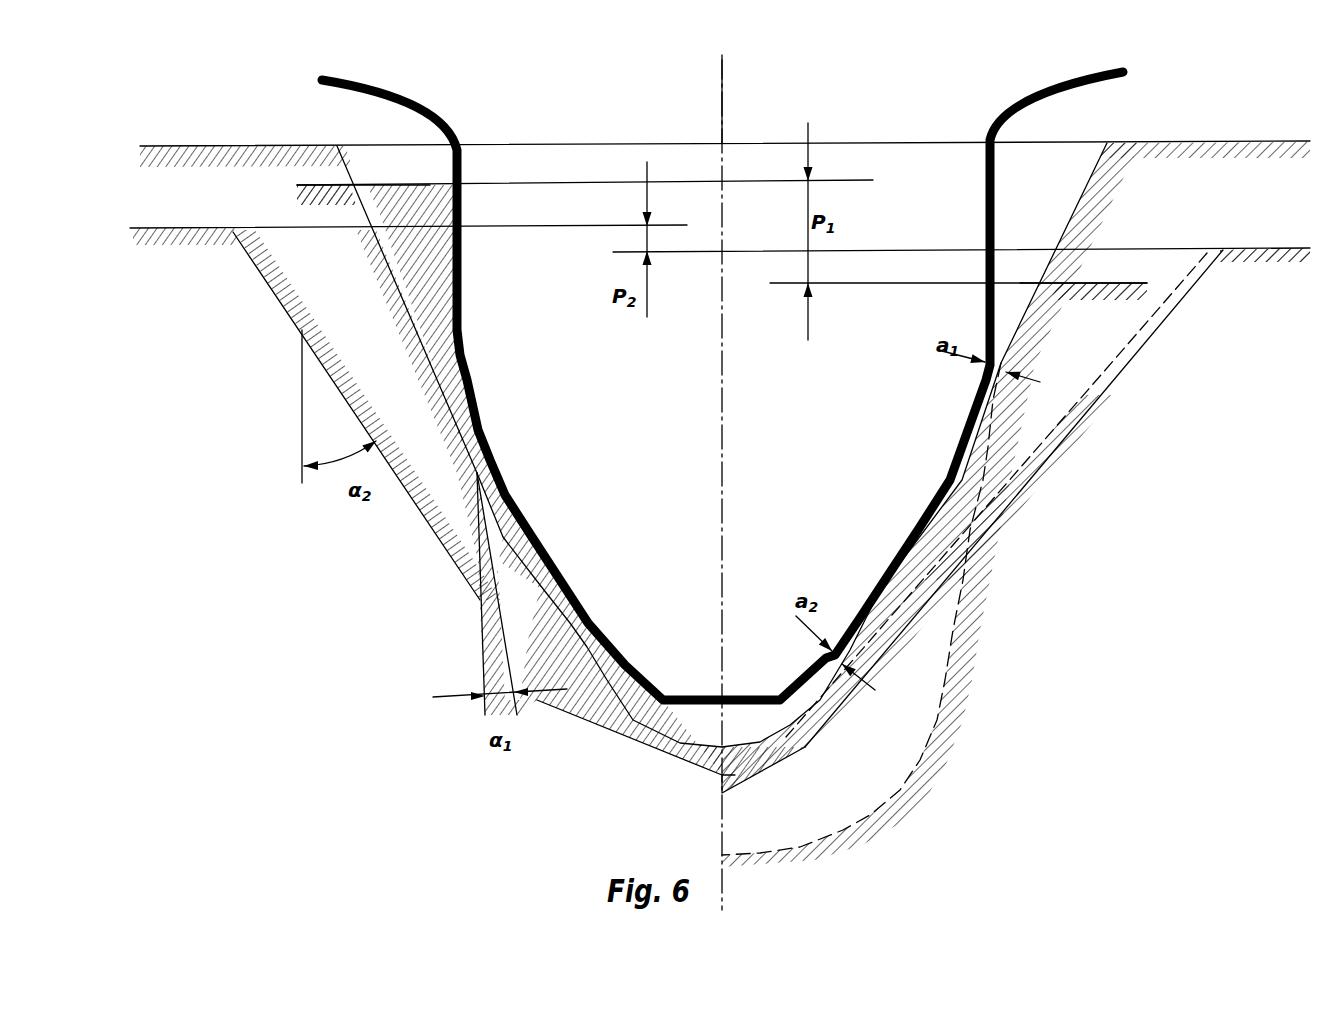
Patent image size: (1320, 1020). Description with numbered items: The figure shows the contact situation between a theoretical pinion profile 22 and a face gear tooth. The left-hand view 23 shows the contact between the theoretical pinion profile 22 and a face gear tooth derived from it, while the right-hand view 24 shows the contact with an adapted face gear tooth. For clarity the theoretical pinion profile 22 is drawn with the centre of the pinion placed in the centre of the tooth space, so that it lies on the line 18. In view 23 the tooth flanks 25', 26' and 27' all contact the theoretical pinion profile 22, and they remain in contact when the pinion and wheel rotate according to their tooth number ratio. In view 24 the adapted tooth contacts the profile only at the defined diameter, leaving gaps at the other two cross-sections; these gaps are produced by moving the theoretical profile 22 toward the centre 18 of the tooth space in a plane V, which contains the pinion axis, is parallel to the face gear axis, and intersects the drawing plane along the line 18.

The line of the centre of the tooth space 18 is at (724, 440).
The theoretical pinion profile 22 is at (448, 122).
The view of contact with derived face gear tooth 23 is at (385, 647).
The view of contact with adapted face gear tooth 24 is at (1052, 643).
The tooth flank at cross-section 25 25' is at (370, 159).
The tooth flank at cross-section 26 26' is at (384, 430).
The tooth flank at cross-section 27 27' is at (334, 415).
The plane of movement of the profile centre V is at (723, 143).